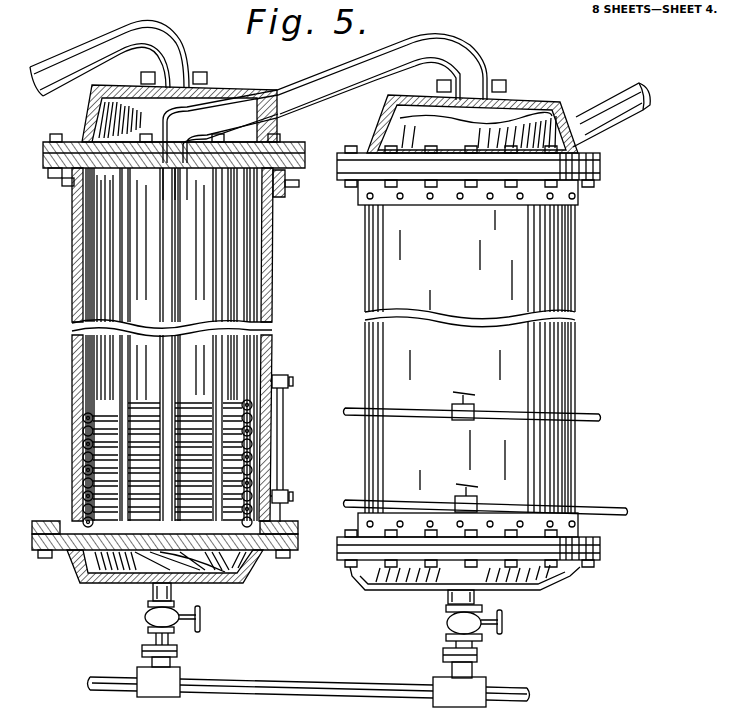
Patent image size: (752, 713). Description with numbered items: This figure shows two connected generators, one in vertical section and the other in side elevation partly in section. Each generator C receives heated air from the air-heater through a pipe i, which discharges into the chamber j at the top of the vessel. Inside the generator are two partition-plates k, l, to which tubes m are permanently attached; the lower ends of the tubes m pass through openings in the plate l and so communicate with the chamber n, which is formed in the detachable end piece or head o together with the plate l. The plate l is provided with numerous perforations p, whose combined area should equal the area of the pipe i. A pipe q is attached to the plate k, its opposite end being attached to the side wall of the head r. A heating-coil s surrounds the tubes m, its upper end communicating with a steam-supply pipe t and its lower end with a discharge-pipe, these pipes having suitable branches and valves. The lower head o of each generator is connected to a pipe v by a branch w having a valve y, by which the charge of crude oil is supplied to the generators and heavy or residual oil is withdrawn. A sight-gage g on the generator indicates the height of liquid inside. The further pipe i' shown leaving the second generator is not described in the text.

The generator C is at (316, 362).
The pipe i is at (258, 91).
The outlet pipe i' is at (611, 113).
The chamber j is at (100, 118).
The head r is at (210, 78).
The pipe q is at (282, 120).
The partition-plate k is at (208, 170).
The tubes m is at (226, 252).
The heating-coil s is at (204, 408).
The sight-gage g is at (286, 434).
The detachable end piece or head o is at (84, 566).
The partition-plate l is at (212, 580).
The perforations p is at (243, 573).
The chamber n is at (125, 590).
The valve y is at (146, 619).
The branch w is at (178, 652).
The pipe v is at (398, 682).
The steam-supply pipe t is at (400, 406).